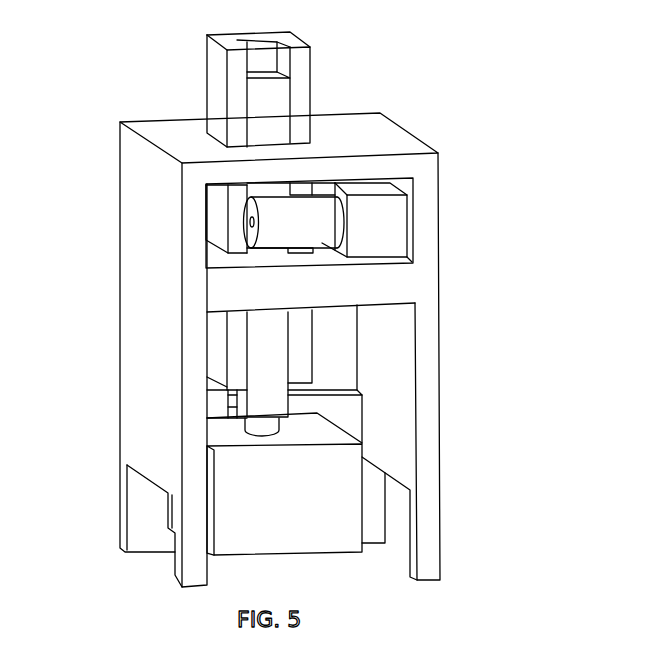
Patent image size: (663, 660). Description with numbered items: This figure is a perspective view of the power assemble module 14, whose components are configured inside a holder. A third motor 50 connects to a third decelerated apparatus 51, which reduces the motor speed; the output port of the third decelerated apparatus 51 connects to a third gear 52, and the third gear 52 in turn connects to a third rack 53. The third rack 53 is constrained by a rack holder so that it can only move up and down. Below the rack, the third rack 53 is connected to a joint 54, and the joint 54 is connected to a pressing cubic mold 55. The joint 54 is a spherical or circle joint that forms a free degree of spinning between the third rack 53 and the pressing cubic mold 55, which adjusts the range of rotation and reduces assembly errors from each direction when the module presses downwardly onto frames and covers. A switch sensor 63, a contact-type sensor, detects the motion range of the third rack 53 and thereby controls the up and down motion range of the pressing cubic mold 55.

The power assemble module 14 is at (207, 43).
The third motor 50 is at (320, 188).
The third decelerated apparatus 51 is at (383, 223).
The third gear 52 is at (278, 212).
The third rack 53 is at (275, 365).
The joint 54 is at (265, 427).
The pressing cubic mold 55 is at (295, 508).
The switch sensor 63 is at (207, 401).